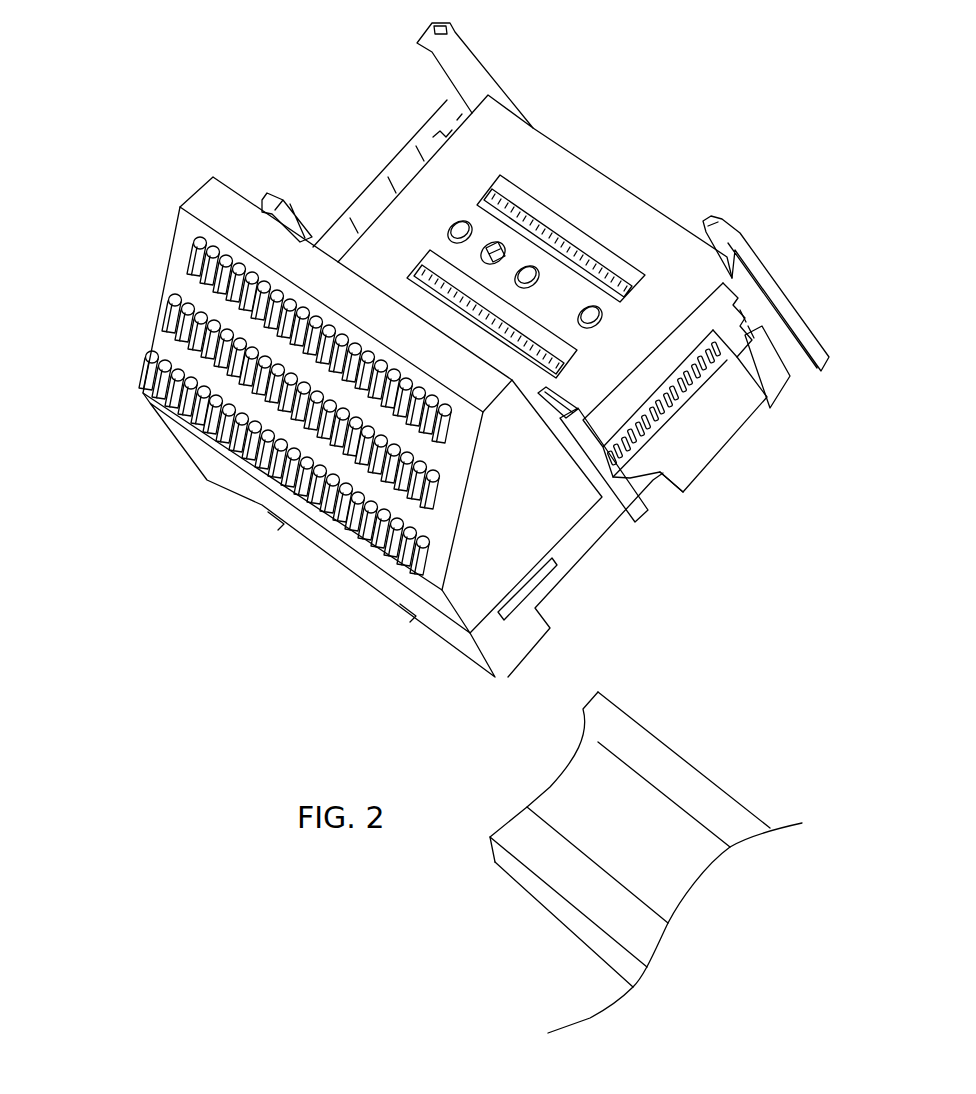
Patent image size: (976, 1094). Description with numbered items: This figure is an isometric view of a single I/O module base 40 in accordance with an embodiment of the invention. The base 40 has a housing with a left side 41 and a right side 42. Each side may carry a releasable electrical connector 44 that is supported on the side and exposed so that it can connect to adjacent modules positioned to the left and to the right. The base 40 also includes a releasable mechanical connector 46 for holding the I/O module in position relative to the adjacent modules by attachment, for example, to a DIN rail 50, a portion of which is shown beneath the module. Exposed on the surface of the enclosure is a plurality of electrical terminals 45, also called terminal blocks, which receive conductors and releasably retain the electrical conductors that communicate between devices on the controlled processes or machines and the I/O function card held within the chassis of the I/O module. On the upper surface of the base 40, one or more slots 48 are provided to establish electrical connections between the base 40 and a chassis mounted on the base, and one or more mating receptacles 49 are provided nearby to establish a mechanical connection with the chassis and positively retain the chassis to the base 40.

The I/O module base 40 is at (256, 50).
The left side 41 is at (100, 380).
The right side 42 is at (510, 668).
The releasable electrical connector 44 is at (756, 291).
The electrical terminals 45 is at (317, 490).
The releasable mechanical connector 46 is at (608, 561).
The slots 48 is at (572, 214).
The mating receptacles 49 is at (488, 240).
The DIN rail 50 is at (553, 862).